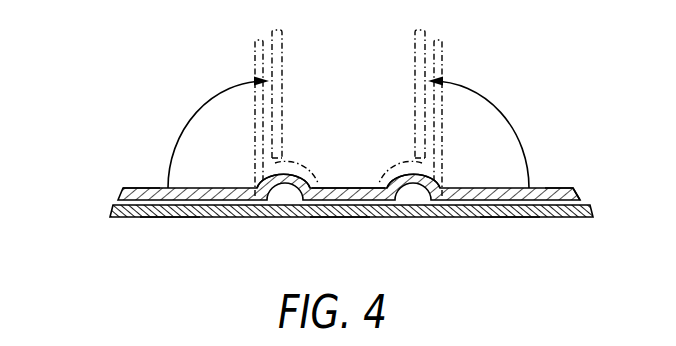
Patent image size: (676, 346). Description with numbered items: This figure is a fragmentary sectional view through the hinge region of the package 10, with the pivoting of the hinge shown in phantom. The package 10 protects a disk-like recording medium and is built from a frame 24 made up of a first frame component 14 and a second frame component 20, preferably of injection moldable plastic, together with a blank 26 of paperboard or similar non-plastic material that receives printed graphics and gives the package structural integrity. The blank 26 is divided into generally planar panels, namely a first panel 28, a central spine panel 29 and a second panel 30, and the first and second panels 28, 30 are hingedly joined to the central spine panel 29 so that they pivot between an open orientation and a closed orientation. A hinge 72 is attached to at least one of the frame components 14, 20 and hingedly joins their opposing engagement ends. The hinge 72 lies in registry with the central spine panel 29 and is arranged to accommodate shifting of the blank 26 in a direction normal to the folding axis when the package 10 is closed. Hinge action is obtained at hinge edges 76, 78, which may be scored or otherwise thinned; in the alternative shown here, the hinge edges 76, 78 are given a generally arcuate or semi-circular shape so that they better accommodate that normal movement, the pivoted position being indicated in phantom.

The package 10 is at (561, 105).
The first frame component 14 is at (142, 187).
The second frame component 20 is at (568, 186).
The frame 24 is at (108, 172).
The blank 26 is at (99, 243).
The first panel 28 is at (172, 217).
The central spine panel 29 is at (340, 217).
The second panel 30 is at (510, 217).
The hinge 72 is at (347, 186).
The hinge edge 76 is at (292, 166).
The hinge edge 78 is at (403, 166).